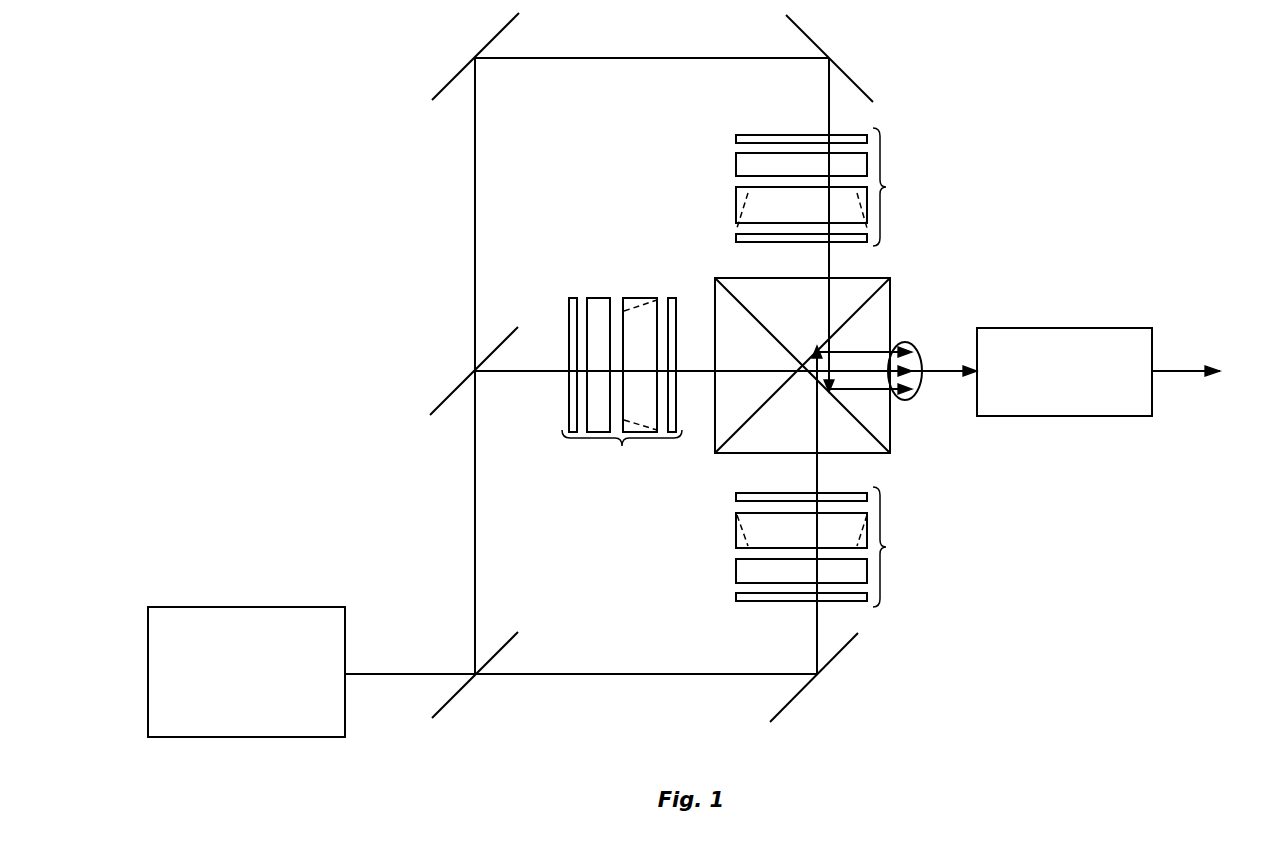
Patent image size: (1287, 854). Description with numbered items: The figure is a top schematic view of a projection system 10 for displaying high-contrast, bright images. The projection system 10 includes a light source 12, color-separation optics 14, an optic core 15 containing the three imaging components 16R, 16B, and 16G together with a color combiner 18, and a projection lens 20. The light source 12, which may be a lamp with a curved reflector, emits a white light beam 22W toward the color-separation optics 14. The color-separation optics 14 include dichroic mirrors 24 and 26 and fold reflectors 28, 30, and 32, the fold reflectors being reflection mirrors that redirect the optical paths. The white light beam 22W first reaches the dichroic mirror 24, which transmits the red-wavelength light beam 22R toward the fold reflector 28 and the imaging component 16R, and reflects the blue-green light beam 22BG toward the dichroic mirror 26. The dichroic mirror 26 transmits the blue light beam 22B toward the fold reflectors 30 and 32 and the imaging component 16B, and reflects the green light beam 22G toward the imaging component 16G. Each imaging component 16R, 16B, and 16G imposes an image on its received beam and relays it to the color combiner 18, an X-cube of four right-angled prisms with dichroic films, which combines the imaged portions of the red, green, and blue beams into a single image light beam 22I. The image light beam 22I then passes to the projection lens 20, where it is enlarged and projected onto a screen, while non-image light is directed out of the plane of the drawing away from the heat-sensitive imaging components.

The projection system 10 is at (296, 196).
The light source 12 is at (261, 740).
The color-separation optics 14 is at (432, 368).
The optic core 15 is at (915, 457).
The imaging component 16B is at (836, 187).
The imaging component 16G is at (622, 389).
The imaging component 16R is at (836, 547).
The color combiner 18 is at (890, 312).
The projection lens 20 is at (1067, 328).
The light beam 22B is at (657, 57).
The light beam 22BG is at (476, 540).
The light beam 22G is at (525, 373).
The light beam 22I is at (937, 375).
The light beam 22R is at (598, 672).
The light beam 22W is at (423, 672).
The dichroic mirror 24 is at (450, 703).
The dichroic mirror 26 is at (440, 407).
The fold reflector 28 is at (790, 703).
The fold reflector 30 is at (440, 98).
The fold reflector 32 is at (868, 82).